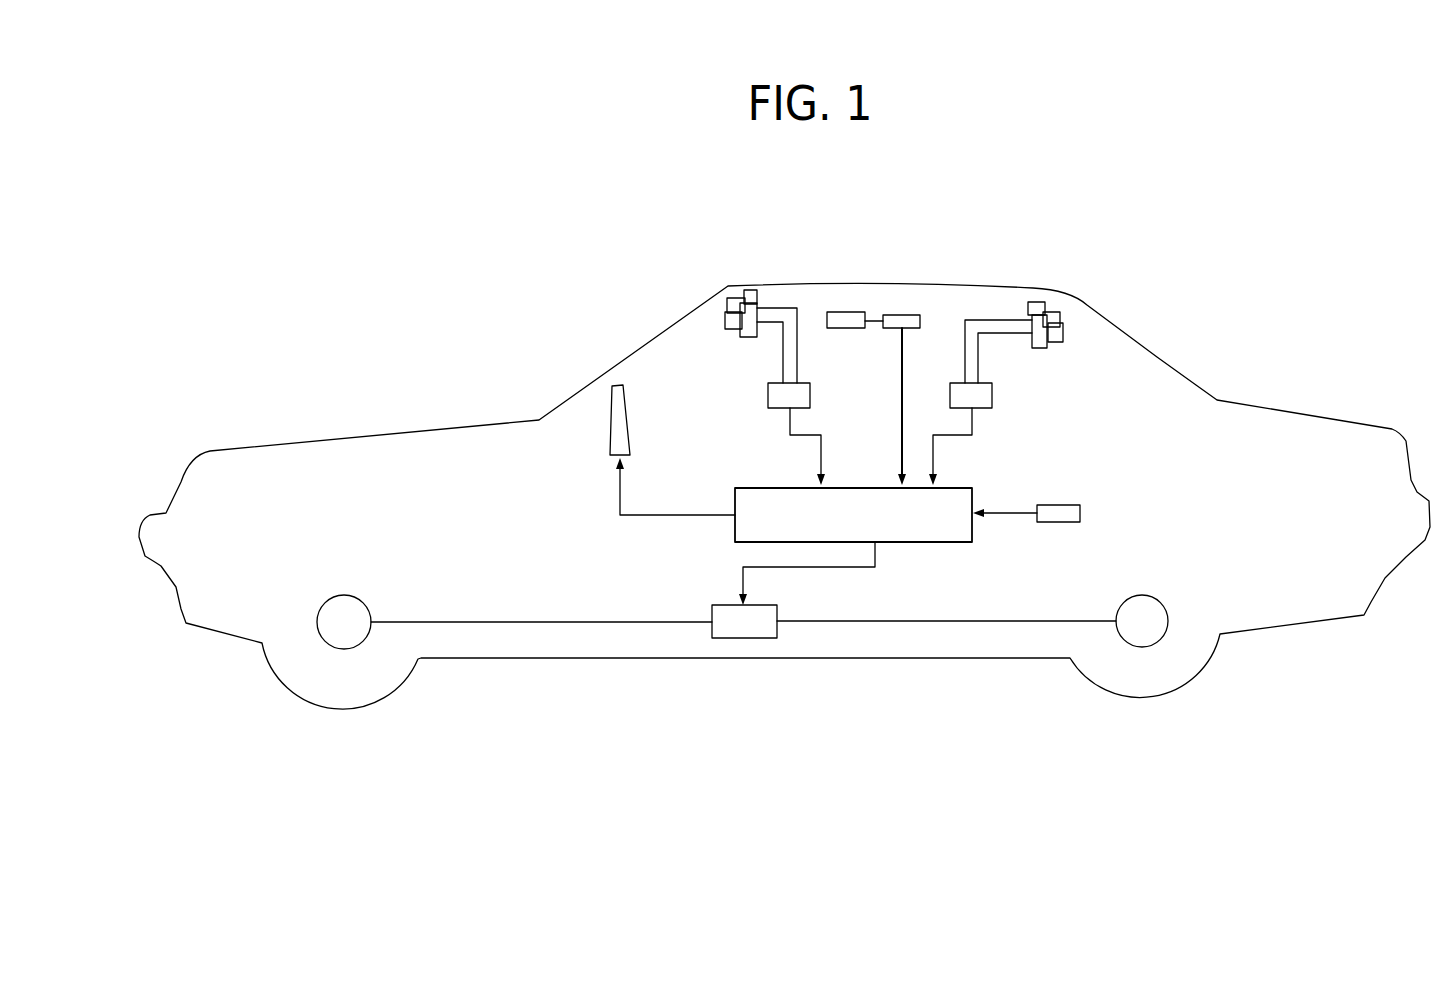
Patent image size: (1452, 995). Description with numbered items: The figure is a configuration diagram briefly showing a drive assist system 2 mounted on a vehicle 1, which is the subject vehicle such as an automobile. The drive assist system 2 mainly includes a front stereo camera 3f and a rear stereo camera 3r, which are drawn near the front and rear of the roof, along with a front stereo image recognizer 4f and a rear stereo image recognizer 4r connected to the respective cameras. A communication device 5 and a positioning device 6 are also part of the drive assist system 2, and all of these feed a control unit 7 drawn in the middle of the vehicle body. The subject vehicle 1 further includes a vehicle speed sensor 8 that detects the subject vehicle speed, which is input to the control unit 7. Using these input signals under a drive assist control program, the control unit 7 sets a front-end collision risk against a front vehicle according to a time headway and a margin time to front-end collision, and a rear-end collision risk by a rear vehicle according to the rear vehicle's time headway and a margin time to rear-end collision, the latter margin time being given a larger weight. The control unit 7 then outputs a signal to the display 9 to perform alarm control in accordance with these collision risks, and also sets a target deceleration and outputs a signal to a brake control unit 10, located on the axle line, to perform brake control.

The vehicle 1 is at (968, 218).
The drive assist system 2 is at (1257, 441).
The front stereo camera 3f is at (737, 297).
The rear stereo camera 3r is at (1052, 313).
The front stereo image recognizer 4f is at (768, 397).
The rear stereo image recognizer 4r is at (993, 395).
The communication device 5 is at (848, 312).
The positioning device 6 is at (903, 313).
The control unit 7 is at (967, 487).
The vehicle speed sensor 8 is at (1082, 511).
The display 9 is at (608, 400).
The brake control unit 10 is at (743, 638).